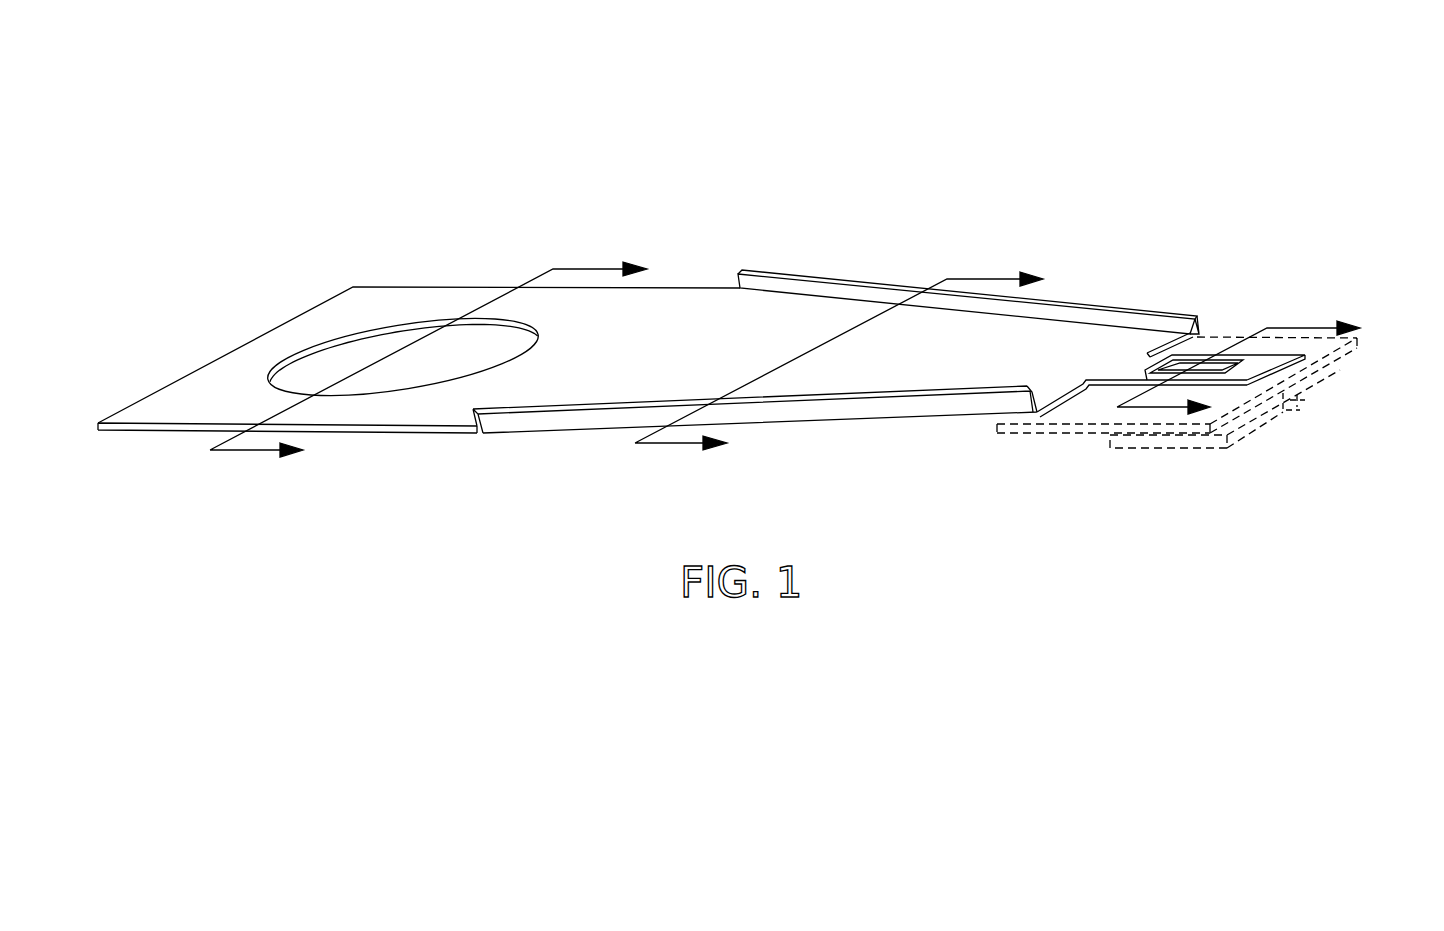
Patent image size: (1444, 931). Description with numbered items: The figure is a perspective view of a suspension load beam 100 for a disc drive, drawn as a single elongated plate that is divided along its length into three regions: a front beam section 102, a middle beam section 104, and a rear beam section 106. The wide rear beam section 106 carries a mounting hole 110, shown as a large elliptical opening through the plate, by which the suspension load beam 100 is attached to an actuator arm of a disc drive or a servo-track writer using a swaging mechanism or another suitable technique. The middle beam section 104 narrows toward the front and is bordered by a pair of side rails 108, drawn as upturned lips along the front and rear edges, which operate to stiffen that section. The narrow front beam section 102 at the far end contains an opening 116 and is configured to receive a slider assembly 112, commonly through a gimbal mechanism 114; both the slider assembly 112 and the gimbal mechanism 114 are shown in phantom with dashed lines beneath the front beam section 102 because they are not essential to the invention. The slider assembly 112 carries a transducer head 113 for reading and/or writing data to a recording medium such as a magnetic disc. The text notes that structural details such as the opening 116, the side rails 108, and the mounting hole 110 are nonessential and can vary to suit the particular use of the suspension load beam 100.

The suspension load beam 100 is at (754, 313).
The front beam section 102 is at (1277, 325).
The middle beam section 104 is at (973, 269).
The rear beam section 106 is at (387, 298).
The side rails 108 is at (1118, 307).
The mounting hole 110 is at (317, 357).
The slider assembly 112 is at (1212, 452).
The transducer head 113 is at (1305, 410).
The gimbal mechanism 114 is at (1047, 433).
The opening 116 is at (1280, 370).